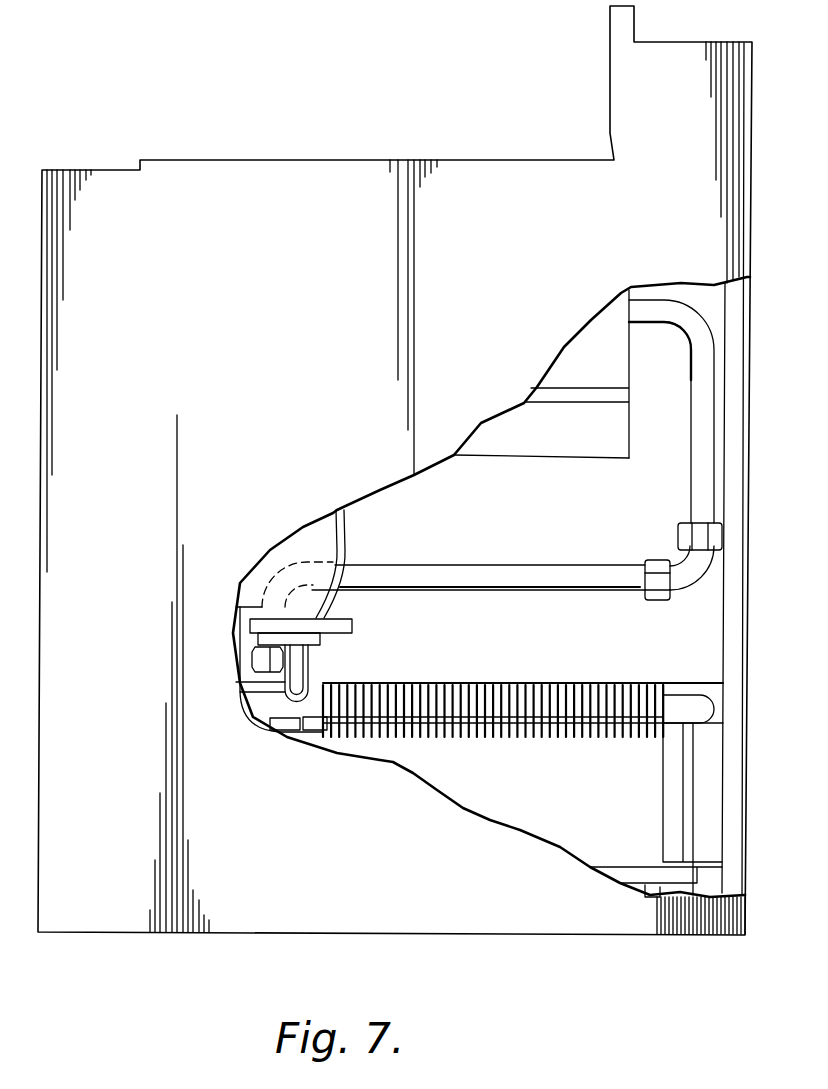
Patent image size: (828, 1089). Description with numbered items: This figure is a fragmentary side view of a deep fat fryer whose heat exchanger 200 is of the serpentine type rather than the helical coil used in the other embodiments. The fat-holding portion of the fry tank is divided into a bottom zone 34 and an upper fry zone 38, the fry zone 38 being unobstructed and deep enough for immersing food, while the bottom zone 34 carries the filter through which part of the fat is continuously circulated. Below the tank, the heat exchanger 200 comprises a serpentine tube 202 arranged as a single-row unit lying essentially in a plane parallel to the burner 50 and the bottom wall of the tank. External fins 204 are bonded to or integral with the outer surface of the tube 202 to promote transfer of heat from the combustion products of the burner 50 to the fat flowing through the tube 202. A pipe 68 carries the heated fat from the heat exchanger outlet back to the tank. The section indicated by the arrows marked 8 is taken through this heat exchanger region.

The section line 8- 8 is at (243, 932).
The bottom zone 34 is at (589, 434).
The fry zone 38 is at (607, 364).
The burner 50 is at (607, 871).
The pipe 68 is at (511, 570).
The heat exchanger 200 is at (523, 789).
The serpentine tube 202 is at (468, 707).
The external fins 204 is at (580, 737).